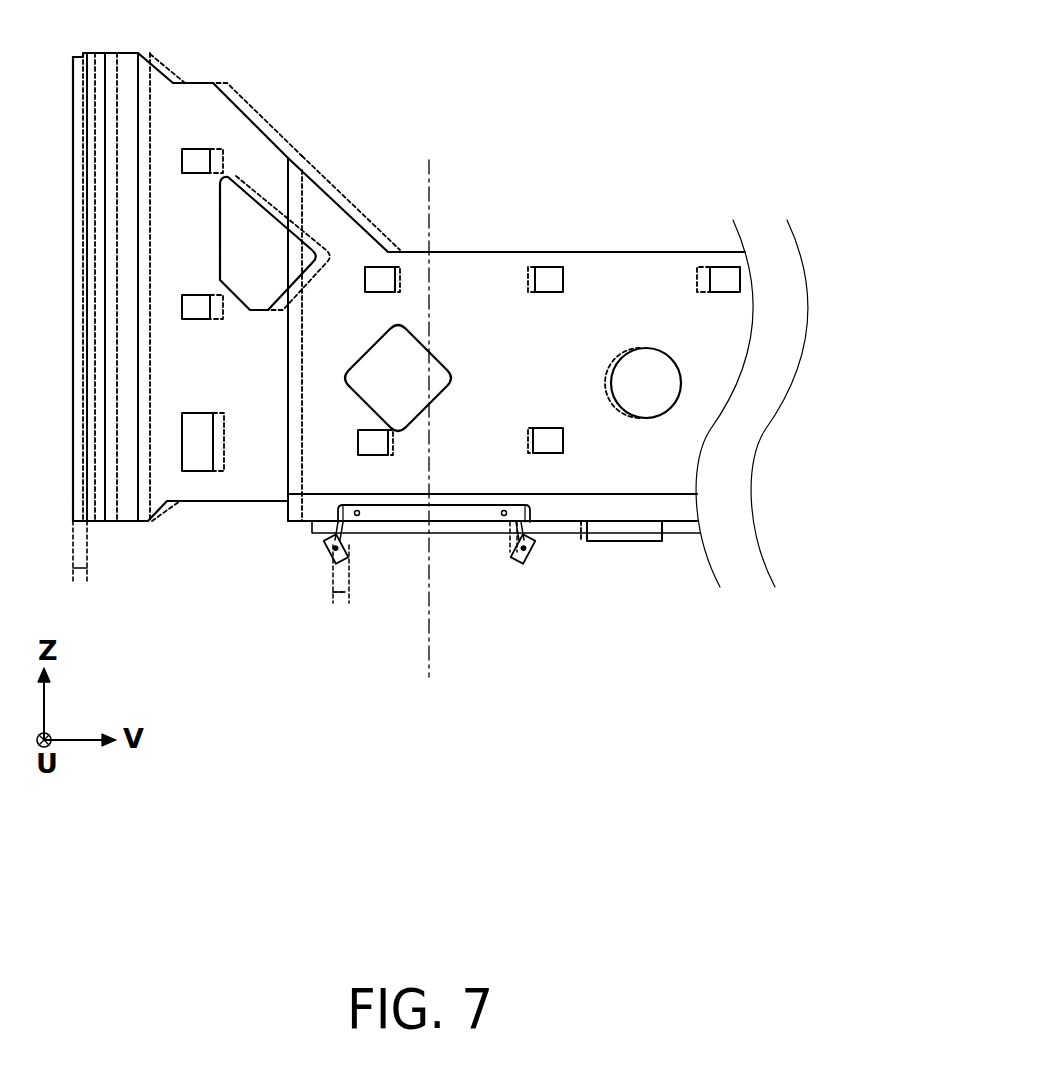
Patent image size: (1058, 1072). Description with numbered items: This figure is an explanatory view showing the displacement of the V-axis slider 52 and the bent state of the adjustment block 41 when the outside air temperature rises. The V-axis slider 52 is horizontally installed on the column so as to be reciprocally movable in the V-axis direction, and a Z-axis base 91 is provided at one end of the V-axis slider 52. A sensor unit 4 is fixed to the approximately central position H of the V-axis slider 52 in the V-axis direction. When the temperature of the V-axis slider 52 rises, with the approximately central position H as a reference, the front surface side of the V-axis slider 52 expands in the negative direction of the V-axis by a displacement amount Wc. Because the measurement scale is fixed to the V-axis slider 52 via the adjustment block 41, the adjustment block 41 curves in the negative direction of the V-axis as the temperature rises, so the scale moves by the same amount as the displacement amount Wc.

The Z-axis base 91 is at (228, 122).
The V-axis slider 52 is at (475, 268).
The adjustment block 41 is at (327, 555).
The sensor unit 4 is at (460, 587).
The displacement amount Wc is at (80, 570).
The approximately central position H is at (434, 706).